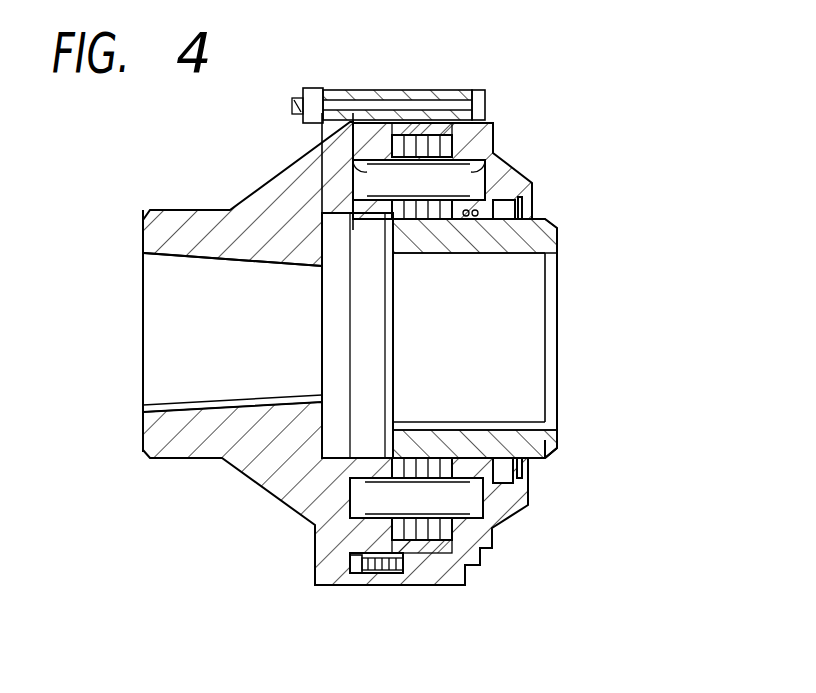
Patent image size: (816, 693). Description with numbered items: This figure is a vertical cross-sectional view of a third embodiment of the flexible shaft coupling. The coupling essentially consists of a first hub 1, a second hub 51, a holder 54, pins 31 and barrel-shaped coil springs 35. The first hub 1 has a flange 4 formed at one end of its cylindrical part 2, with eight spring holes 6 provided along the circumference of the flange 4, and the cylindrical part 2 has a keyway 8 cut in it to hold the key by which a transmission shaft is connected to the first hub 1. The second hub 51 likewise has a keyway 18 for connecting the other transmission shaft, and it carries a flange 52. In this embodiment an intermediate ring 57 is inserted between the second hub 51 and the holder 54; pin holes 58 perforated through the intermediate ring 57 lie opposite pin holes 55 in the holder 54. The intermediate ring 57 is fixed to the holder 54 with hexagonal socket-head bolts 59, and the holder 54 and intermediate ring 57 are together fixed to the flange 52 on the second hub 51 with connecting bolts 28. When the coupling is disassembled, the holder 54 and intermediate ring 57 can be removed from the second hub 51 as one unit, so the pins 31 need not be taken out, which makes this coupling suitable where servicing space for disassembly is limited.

The first hub 1 is at (532, 445).
The cylindrical part 2 is at (541, 459).
The flange 4 is at (440, 586).
The spring holes 6 is at (409, 586).
The keyway 8 is at (518, 422).
The keyway 18 is at (165, 405).
The connecting bolts 28 is at (456, 105).
The pins 31 is at (472, 500).
The barrel-shaped coil springs 35 is at (421, 135).
The second hub 51 is at (206, 208).
The flange 52 is at (330, 133).
The holder 54 is at (494, 127).
The pin holes 55 is at (494, 160).
The intermediate ring 57 is at (373, 92).
The pin holes 58 is at (355, 178).
The hexagonal socket-head bolts 59 is at (353, 586).